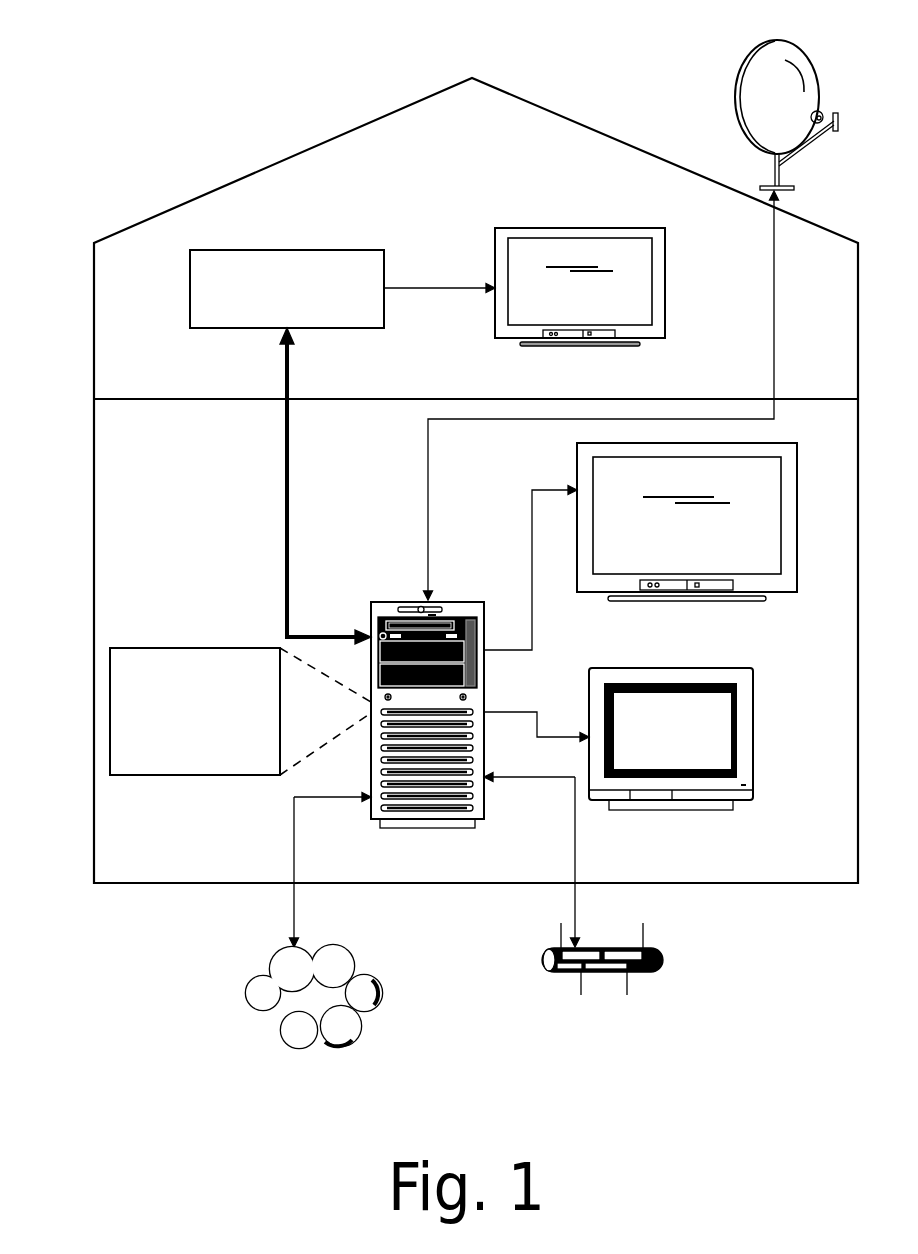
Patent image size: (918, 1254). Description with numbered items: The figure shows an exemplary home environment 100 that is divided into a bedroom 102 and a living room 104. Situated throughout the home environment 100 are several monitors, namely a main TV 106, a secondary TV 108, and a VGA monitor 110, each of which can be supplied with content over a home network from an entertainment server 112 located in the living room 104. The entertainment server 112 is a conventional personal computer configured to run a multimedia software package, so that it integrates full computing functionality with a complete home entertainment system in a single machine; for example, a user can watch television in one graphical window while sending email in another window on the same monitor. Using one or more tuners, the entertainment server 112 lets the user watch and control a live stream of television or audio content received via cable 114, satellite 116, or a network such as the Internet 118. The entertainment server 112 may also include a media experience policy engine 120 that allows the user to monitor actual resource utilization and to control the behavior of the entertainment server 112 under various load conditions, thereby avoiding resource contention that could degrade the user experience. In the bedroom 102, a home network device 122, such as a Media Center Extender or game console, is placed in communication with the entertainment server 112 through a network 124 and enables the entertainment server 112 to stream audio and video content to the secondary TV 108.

The home environment 100 is at (201, 72).
The bedroom 102 is at (93, 320).
The living room 104 is at (93, 640).
The main TV 106 is at (766, 598).
The secondary TV 108 is at (620, 228).
The VGA monitor 110 is at (753, 738).
The entertainment server 112 is at (387, 602).
The cable 114 is at (663, 963).
The satellite 116 is at (765, 40).
The Internet 118 is at (248, 1002).
The media experience policy engine 120 is at (146, 648).
The home network device 122 is at (288, 250).
The network 124 is at (286, 566).